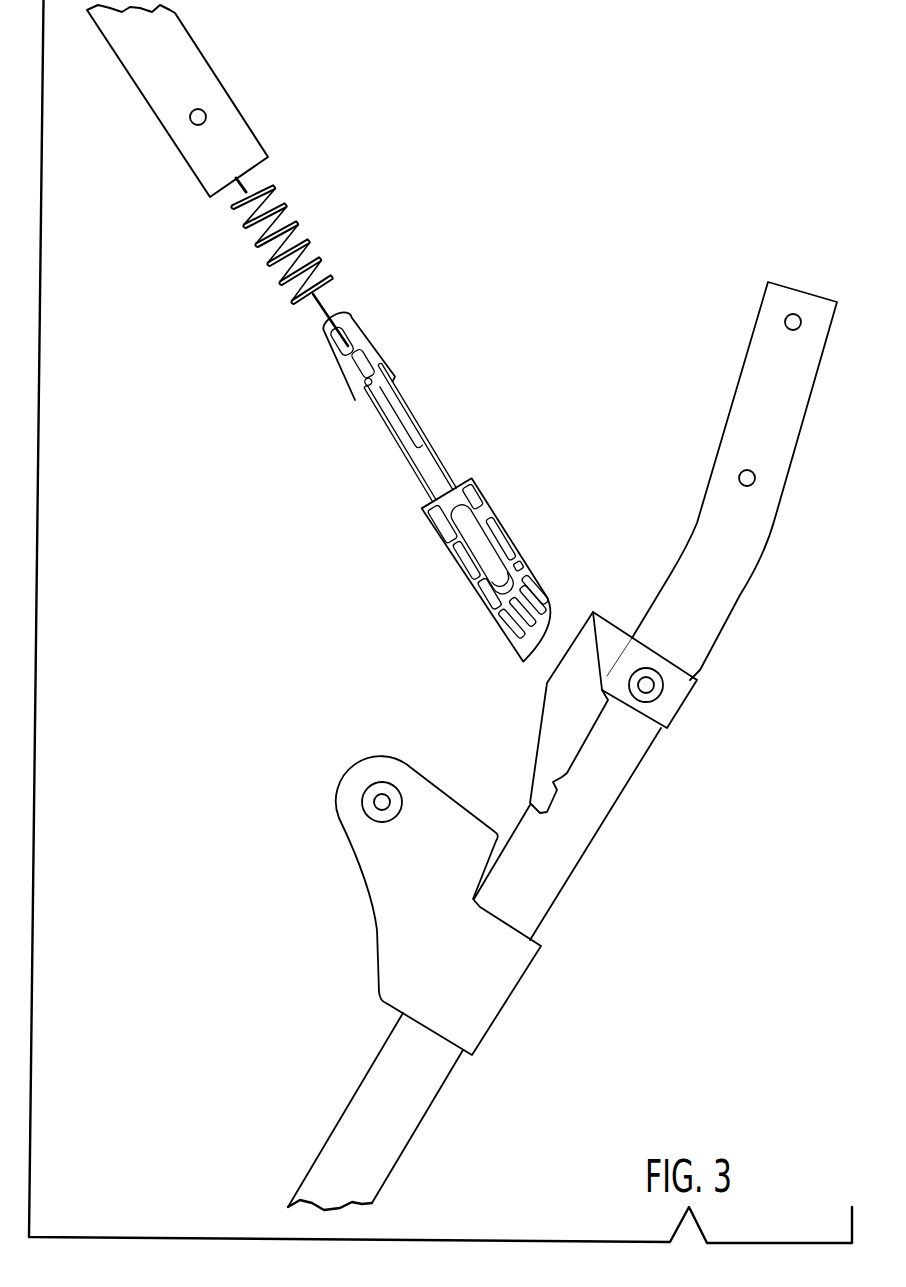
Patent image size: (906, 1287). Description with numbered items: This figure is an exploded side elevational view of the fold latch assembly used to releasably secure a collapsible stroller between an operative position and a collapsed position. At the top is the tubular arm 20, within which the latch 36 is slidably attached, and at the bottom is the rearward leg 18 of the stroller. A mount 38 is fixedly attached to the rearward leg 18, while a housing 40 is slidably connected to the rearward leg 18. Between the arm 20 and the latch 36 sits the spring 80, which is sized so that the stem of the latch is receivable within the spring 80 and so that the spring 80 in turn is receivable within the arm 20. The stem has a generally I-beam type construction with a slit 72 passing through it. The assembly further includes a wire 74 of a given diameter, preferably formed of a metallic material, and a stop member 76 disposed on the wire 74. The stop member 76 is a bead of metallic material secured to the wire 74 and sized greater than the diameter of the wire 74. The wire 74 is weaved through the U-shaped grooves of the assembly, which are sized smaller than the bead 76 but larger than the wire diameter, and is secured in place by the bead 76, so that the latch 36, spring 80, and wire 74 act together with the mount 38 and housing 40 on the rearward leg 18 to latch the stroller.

The rearward leg 18 is at (362, 1108).
The arm 20 is at (160, 70).
The latch 36 is at (441, 481).
The mount 38 is at (693, 717).
The housing 40 is at (527, 1012).
The slit 72 is at (407, 432).
The wire 74 is at (323, 295).
The stop member 76 is at (354, 354).
The spring 80 is at (299, 236).